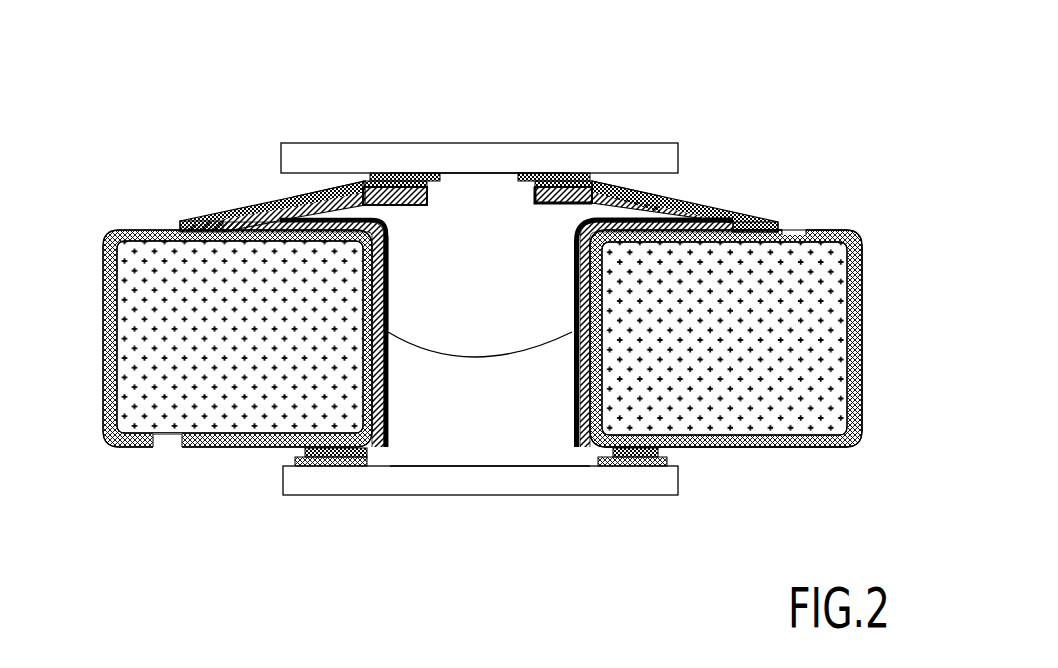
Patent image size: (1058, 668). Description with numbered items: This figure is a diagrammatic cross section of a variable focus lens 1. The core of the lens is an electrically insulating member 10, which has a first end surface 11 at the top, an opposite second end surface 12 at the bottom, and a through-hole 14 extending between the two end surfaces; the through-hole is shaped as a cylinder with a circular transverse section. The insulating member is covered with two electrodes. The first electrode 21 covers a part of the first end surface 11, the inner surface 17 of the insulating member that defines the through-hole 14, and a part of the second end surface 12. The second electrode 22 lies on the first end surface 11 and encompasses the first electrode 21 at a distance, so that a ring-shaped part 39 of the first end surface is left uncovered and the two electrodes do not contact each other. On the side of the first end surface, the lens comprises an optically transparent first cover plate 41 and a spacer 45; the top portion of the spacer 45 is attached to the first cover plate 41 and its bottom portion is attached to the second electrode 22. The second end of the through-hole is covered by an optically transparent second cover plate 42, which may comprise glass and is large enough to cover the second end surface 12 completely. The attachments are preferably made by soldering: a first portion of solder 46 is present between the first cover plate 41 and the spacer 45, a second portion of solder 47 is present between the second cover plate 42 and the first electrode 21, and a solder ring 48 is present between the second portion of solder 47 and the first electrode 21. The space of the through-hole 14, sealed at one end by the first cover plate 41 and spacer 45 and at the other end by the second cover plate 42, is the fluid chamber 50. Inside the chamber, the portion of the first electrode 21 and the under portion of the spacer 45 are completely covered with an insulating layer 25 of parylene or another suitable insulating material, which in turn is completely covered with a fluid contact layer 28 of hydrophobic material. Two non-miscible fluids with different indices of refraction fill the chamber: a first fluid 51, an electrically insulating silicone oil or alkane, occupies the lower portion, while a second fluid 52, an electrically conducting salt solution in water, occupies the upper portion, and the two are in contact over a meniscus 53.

The variable focus lens 1 is at (223, 143).
The electrically insulating member 10 is at (760, 378).
The first end surface 11 is at (790, 240).
The second end surface 12 is at (172, 435).
The through-hole 14 is at (515, 432).
The inner surface 17 is at (385, 387).
The first electrode 21 is at (233, 447).
The second electrode 22 is at (148, 230).
The insulating layer 25 is at (653, 198).
The fluid contact layer 28 is at (533, 202).
The uncovered ring-shaped part 39 is at (723, 227).
The first cover plate 41 is at (328, 150).
The second cover plate 42 is at (323, 483).
The spacer 45 is at (618, 192).
The first portion of solder 46 is at (557, 173).
The second portion of solder 47 is at (613, 467).
The solder ring 48 is at (638, 467).
The fluid chamber 50 is at (462, 263).
The first fluid 51 is at (430, 418).
The second fluid 52 is at (480, 207).
The meniscus 53 is at (471, 357).